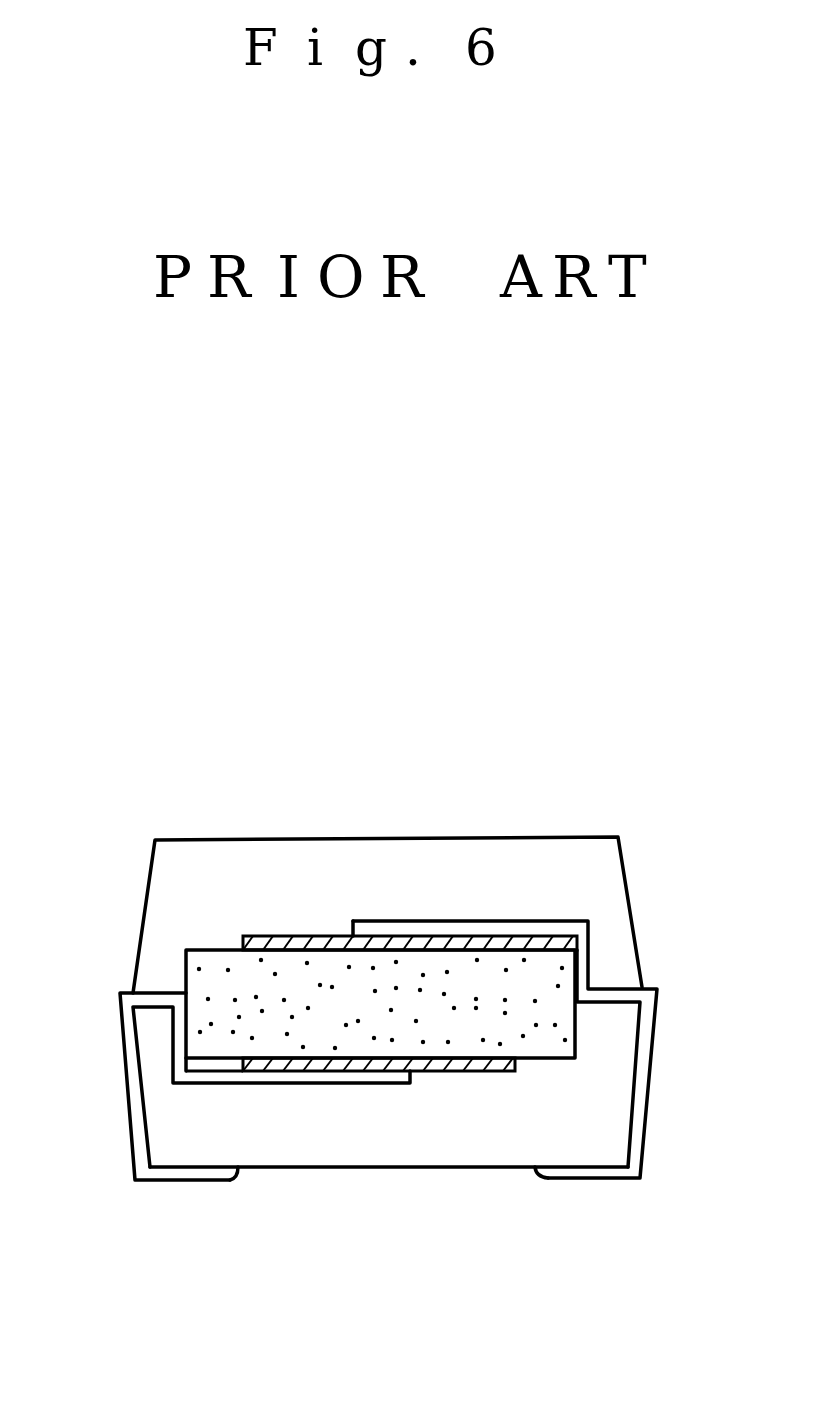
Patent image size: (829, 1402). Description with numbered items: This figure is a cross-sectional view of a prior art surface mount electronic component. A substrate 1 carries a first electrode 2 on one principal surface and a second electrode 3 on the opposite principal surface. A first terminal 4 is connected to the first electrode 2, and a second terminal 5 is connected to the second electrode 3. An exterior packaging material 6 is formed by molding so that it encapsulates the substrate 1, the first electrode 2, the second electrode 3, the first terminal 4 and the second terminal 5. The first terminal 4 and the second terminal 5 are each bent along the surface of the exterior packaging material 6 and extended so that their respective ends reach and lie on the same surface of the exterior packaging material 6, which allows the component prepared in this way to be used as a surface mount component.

The substrate 1 is at (210, 983).
The first electrode 2 is at (333, 937).
The second electrode 3 is at (445, 1070).
The first terminal 4 is at (650, 1020).
The second terminal 5 is at (155, 1175).
The exterior packaging material 6 is at (562, 860).